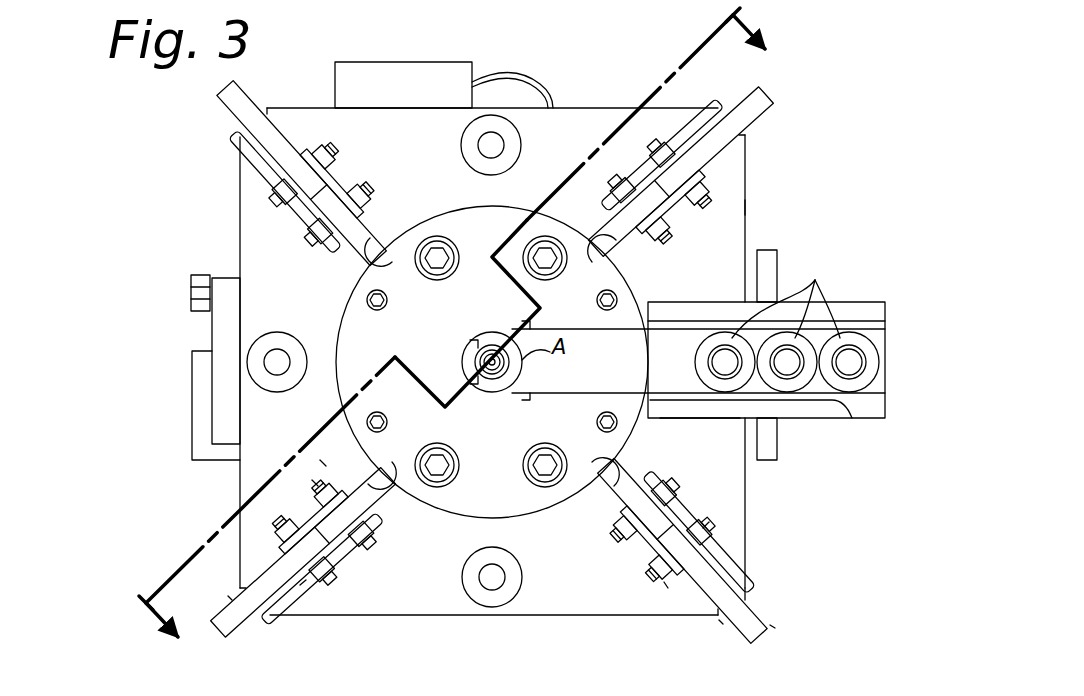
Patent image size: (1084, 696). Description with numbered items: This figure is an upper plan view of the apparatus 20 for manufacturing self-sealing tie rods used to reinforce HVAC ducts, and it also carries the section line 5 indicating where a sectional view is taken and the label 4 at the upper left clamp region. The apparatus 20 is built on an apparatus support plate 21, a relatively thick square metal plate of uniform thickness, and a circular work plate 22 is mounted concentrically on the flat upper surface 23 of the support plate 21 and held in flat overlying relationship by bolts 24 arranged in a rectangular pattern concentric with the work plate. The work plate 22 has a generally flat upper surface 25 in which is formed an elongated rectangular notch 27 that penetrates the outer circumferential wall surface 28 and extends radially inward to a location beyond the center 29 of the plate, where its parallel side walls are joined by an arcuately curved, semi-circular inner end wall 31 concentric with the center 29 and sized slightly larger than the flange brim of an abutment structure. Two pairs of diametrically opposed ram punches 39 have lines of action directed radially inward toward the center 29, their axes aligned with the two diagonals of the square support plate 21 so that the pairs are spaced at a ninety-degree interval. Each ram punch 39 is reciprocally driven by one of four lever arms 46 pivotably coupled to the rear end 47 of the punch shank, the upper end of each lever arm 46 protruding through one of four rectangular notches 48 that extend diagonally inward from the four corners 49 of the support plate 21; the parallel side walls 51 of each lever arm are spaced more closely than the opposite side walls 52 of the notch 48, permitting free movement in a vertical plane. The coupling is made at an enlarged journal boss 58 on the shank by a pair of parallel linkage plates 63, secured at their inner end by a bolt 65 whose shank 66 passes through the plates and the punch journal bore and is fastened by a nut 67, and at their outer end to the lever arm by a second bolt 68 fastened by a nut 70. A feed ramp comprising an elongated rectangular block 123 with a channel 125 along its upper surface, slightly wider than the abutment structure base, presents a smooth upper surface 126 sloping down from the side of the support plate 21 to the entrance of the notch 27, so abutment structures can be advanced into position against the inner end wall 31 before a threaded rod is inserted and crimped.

The mounting bracket 4 is at (320, 222).
The section line 5- 5 is at (465, 337).
The apparatus 20 is at (842, 148).
The apparatus support plate 21 is at (750, 207).
The circular work plate 22 is at (665, 300).
The upper surface 23 is at (598, 118).
The bolts 24 is at (548, 245).
The upper surface 25 is at (552, 500).
The notch 27 is at (620, 428).
The outer circumferential wall surface 28 is at (660, 430).
The center 29 is at (494, 372).
The inner end wall 31 is at (470, 352).
The ram punches 39 is at (392, 238).
The lever arms 46 is at (227, 113).
The rear end 47 is at (665, 170).
The notches 48 is at (226, 600).
The corners 49 is at (748, 592).
The side walls 51 is at (770, 625).
The side walls 52 is at (300, 585).
The journal boss 58 is at (328, 222).
The linkage plates 63 is at (295, 496).
The bolt 65 is at (368, 528).
The shank 66 is at (312, 480).
The nut 67 is at (320, 460).
The second bolt 68 is at (703, 528).
The nut 70 is at (670, 590).
The block 123 is at (885, 420).
The channel 125 is at (892, 340).
The upper surface 126 is at (875, 358).